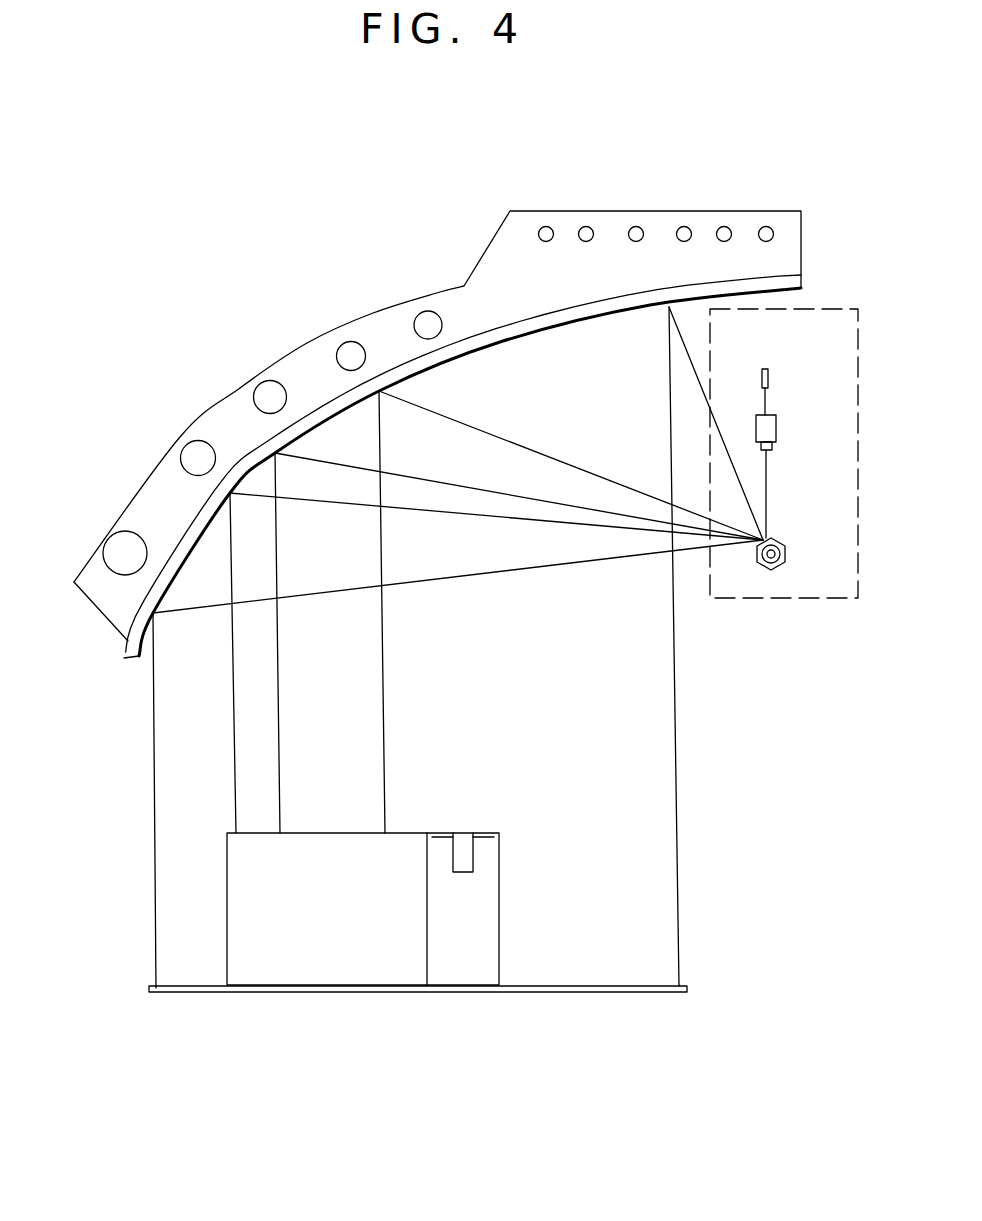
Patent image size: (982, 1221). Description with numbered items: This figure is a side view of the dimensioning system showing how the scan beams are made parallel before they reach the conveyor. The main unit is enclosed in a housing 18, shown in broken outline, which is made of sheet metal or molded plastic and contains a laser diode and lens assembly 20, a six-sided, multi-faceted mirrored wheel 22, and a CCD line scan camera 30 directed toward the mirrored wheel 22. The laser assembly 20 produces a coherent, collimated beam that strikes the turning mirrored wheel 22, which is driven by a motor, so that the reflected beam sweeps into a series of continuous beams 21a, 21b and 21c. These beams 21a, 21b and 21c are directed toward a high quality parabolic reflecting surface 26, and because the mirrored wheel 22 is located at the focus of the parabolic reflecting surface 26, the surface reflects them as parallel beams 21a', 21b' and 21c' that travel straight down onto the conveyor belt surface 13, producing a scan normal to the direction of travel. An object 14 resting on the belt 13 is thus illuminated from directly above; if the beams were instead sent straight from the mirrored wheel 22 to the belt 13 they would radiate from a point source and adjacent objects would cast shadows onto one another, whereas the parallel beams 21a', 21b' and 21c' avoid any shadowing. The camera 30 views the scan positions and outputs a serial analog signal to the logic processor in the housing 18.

The conveyor belt surface 13 is at (610, 992).
The object 14 is at (477, 954).
The housing 18 is at (823, 308).
The laser diode and lens assembly 20 is at (770, 377).
The scan beam 21a is at (722, 423).
The parallel beam 21a' is at (712, 646).
The scan beam 21b is at (571, 465).
The parallel beam 21b' is at (422, 612).
The scan beam 21c is at (458, 600).
The parallel beam 21c' is at (188, 800).
The mirrored wheel 22 is at (783, 540).
The parabolic reflecting surface 26 is at (542, 333).
The CCD line scan camera 30 is at (776, 430).